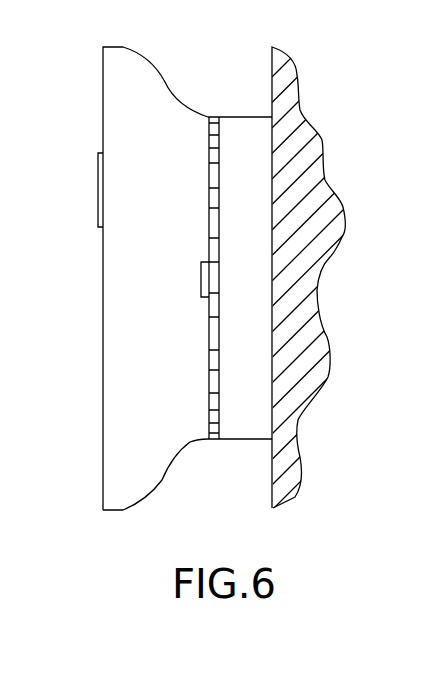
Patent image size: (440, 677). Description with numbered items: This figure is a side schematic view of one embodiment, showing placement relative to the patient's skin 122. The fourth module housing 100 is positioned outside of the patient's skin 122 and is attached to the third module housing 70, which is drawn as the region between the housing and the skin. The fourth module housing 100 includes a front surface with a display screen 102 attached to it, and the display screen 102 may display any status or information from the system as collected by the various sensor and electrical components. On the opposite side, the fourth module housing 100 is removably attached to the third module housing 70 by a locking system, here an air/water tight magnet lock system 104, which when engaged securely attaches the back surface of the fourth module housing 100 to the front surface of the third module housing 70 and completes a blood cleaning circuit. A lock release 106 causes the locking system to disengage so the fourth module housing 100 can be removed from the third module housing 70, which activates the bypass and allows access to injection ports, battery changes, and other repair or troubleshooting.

The fourth module housing 100 is at (125, 58).
The display screen 102 is at (99, 185).
The air/water tight magnet lock system 104 is at (218, 402).
The lock release 106 is at (205, 277).
The third module housing 70 is at (251, 122).
The patient's skin 122 is at (295, 75).